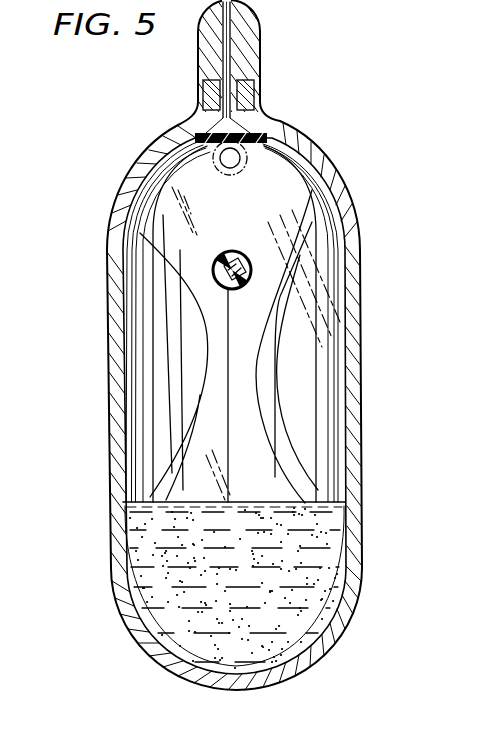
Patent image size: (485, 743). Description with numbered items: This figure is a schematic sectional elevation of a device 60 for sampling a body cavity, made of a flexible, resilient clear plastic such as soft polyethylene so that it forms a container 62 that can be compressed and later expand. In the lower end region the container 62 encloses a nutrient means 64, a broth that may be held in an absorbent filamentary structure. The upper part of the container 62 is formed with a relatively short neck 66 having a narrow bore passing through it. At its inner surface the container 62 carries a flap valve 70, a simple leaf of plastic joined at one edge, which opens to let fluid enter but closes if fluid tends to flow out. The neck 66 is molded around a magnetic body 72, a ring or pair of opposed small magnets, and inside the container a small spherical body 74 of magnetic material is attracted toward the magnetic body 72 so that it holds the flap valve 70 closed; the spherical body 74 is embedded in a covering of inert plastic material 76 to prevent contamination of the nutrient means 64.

The device 60 is at (104, 468).
The container 62 is at (358, 298).
The nutrient means 64 is at (335, 580).
The neck 66 is at (253, 72).
The flap valve 70 is at (255, 142).
The magnetic body 72 is at (255, 97).
The spherical body 74 is at (241, 251).
The covering of inert plastic material 76 is at (222, 287).